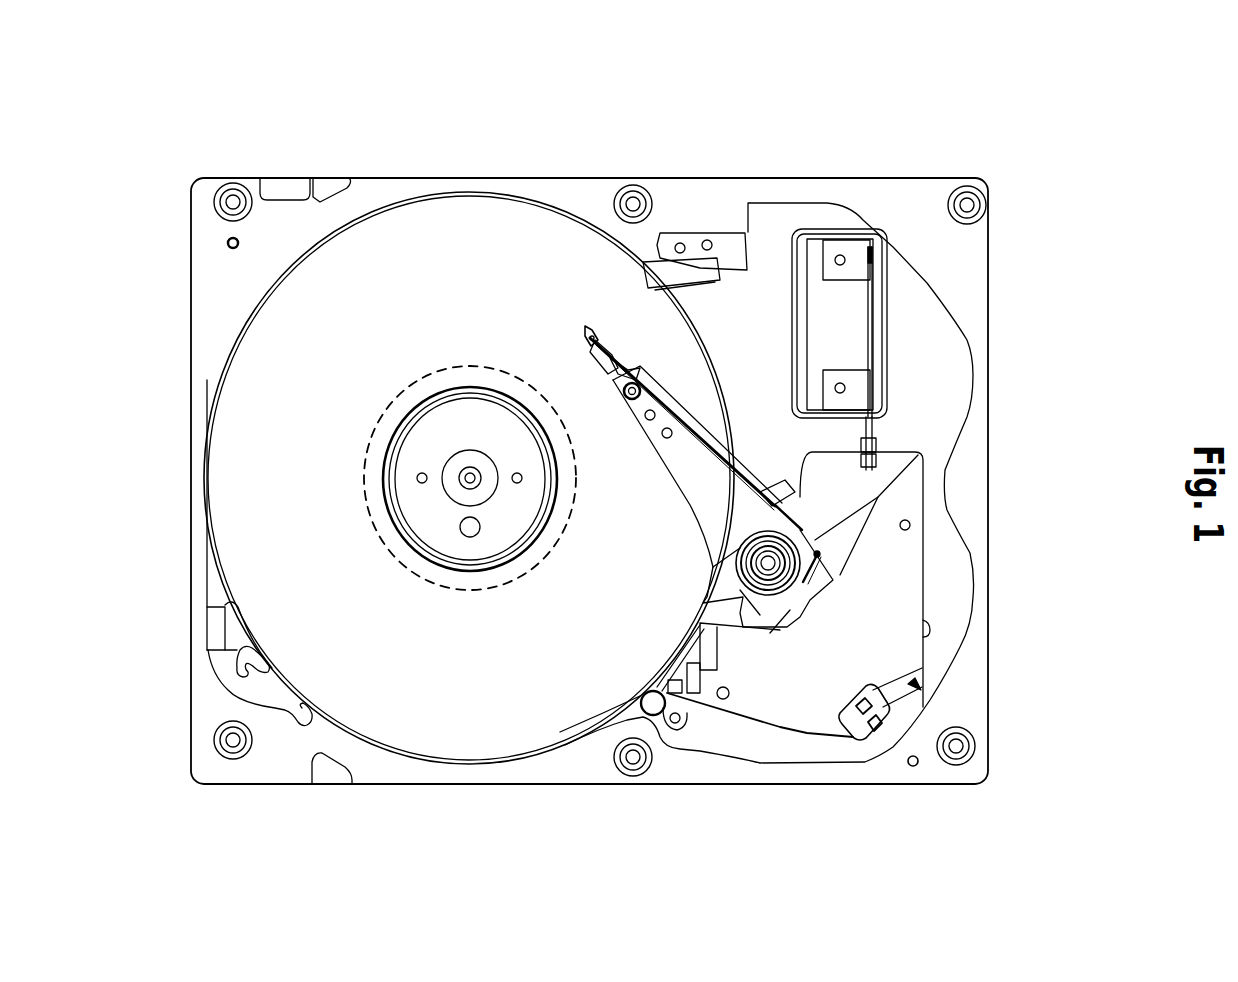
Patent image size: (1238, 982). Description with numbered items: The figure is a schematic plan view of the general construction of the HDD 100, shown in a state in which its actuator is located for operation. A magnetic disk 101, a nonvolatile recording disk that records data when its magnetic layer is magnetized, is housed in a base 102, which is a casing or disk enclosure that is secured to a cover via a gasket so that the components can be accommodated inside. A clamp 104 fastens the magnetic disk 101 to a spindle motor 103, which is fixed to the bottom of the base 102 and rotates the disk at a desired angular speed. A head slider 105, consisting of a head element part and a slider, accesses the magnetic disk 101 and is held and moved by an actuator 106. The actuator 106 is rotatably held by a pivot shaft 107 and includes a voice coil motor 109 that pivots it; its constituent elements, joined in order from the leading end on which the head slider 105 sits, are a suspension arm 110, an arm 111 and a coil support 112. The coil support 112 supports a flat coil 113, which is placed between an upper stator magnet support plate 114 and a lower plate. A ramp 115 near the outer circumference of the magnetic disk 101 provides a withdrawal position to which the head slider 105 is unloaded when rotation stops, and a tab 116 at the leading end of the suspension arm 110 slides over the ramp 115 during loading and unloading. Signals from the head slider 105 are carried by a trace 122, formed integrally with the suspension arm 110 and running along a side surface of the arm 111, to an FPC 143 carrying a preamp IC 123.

The HDD 100 is at (804, 139).
The magnetic disk 101 is at (222, 567).
The base 102 is at (191, 297).
The spindle motor 103 is at (480, 590).
The clamp 104 is at (467, 387).
The head slider 105 is at (588, 352).
The actuator 106 is at (730, 445).
The pivot shaft 107 is at (700, 606).
The voice coil motor 109 is at (937, 575).
The suspension arm 110 is at (614, 378).
The arm 111 is at (664, 470).
The coil support 112 is at (930, 637).
The flat coil 113 is at (826, 622).
The upper stator magnet support plate 114 is at (760, 722).
The ramp 115 is at (680, 280).
The tab 116 is at (586, 336).
The trace 122 is at (672, 396).
The preamp IC 123 is at (803, 520).
The FPC 143 is at (806, 490).